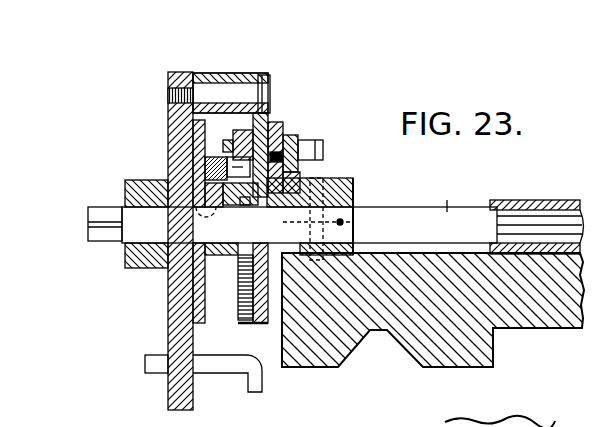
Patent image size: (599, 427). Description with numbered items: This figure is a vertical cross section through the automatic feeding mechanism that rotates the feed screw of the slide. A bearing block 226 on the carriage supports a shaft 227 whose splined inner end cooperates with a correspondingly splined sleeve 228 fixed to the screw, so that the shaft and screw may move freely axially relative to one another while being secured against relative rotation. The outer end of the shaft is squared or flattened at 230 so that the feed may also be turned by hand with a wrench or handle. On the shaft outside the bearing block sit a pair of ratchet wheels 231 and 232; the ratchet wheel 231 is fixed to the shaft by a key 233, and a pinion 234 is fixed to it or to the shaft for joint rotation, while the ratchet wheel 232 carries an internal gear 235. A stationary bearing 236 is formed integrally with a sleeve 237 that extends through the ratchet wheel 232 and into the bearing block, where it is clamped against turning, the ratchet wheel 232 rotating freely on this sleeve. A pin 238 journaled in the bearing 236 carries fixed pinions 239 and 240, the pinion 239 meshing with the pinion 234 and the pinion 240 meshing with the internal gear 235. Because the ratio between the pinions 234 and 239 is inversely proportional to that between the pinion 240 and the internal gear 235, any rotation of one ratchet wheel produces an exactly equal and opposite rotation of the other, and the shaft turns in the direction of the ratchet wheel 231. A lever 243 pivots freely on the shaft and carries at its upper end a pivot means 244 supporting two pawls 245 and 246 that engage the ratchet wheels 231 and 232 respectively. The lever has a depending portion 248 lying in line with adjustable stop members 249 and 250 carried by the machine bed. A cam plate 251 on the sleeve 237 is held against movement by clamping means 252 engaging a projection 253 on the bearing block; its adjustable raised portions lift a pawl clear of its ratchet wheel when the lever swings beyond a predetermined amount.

The bearing block 226 is at (388, 205).
The shaft 227 is at (447, 200).
The sleeve 228 is at (532, 200).
The squared or flattened terminal portion 230 is at (97, 213).
The ratchet wheel 231 is at (180, 330).
The ratchet wheel 232 is at (257, 321).
The key 233 is at (200, 219).
The pinion 234 is at (200, 287).
The internal gear 235 is at (270, 288).
The stationary bearing 236 is at (203, 140).
The sleeve 237 is at (352, 181).
The pin 238 is at (207, 163).
The pinion 239 is at (227, 152).
The pinion 240 is at (245, 205).
The lever 243 is at (168, 82).
The pivot means 244 is at (200, 90).
The pawl 245 is at (207, 73).
The pawl 246 is at (245, 73).
The depending portion 248 is at (172, 395).
The adjustable stop member 249 is at (222, 366).
The adjustable stop member 250 is at (22, 381).
The cam plate 251 is at (276, 124).
The clamping means 252 is at (298, 142).
The projection 253 is at (297, 155).